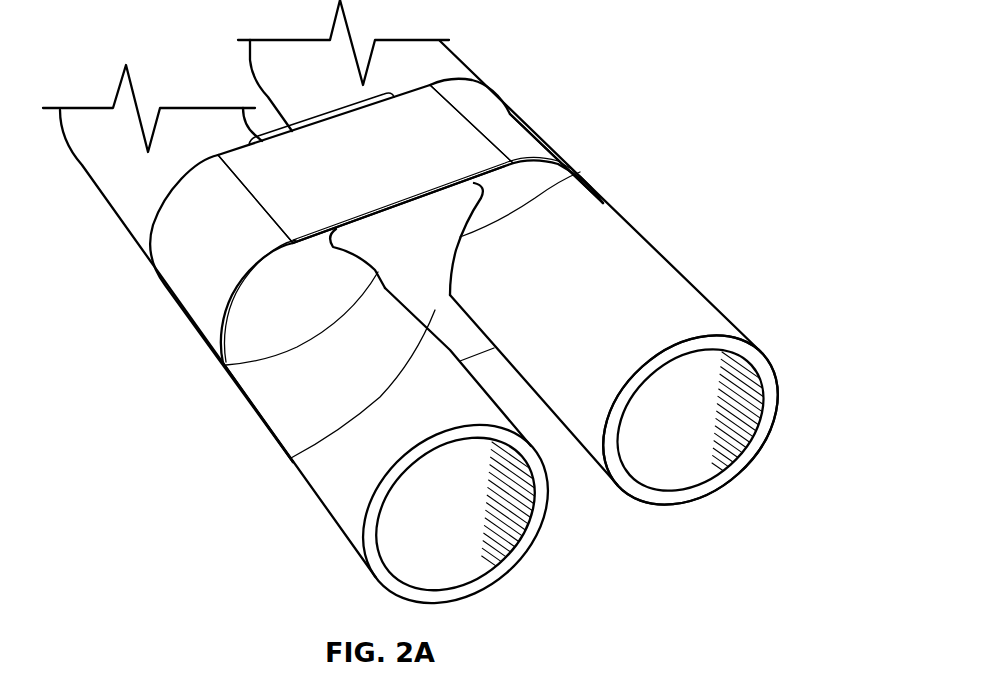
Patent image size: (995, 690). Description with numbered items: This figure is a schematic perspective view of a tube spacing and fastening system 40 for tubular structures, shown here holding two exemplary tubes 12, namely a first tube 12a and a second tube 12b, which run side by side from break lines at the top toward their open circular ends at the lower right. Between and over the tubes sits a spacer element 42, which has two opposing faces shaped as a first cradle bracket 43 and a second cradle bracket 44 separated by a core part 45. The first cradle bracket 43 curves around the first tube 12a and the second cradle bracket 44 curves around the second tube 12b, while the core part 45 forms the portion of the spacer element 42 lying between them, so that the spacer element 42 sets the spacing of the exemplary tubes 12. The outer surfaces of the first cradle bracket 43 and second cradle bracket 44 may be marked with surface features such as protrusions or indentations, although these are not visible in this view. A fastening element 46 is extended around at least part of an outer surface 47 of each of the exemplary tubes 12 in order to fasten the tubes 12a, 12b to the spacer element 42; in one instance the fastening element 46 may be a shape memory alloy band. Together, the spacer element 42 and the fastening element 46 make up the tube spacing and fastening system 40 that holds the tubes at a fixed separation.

The tube spacing and fastening system 40 is at (612, 22).
The spacer element 42 is at (492, 365).
The first cradle bracket 43 is at (224, 366).
The second cradle bracket 44 is at (580, 173).
The core part 45 is at (290, 457).
The fastening element 46 is at (542, 128).
The outer surface 47 is at (252, 403).
The exemplary tubes 12 is at (758, 458).
The first exemplary tube 12a is at (323, 478).
The second exemplary tube 12b is at (677, 272).